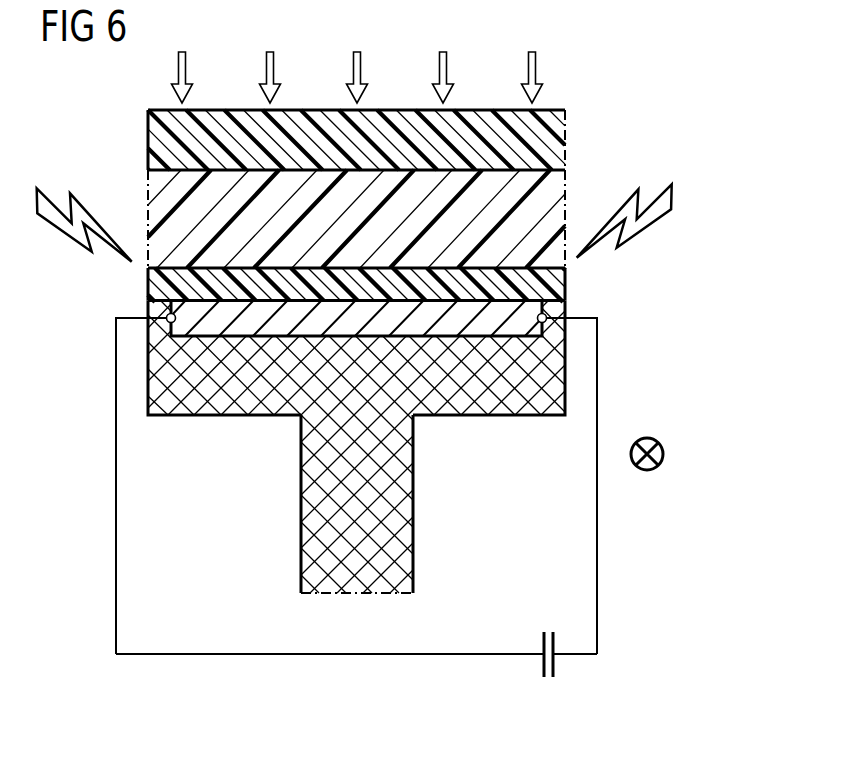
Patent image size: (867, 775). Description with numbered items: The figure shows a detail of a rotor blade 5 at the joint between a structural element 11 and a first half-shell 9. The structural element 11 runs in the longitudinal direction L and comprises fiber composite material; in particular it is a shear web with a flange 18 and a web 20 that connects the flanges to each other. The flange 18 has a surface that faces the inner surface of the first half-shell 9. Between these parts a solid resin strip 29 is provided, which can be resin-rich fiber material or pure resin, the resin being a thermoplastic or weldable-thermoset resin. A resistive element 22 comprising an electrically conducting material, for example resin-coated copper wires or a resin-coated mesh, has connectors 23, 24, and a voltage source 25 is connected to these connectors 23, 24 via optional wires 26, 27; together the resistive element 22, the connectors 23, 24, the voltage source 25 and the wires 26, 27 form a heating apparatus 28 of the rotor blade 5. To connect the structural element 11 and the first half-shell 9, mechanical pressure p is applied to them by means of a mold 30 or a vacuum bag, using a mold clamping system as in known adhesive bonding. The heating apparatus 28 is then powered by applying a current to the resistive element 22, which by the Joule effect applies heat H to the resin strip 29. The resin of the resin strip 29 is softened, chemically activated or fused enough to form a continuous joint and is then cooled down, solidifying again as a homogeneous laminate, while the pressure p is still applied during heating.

The rotor blade 5 is at (760, 102).
The first half-shell 9 is at (540, 169).
The structural element 11 is at (290, 546).
The flange 18 is at (215, 418).
The web 20 is at (413, 508).
The resistive element 22 is at (367, 325).
The connector 23 is at (166, 317).
The connector 24 is at (547, 316).
The voltage source 25 is at (544, 663).
The wire 26 is at (116, 520).
The wire 27 is at (597, 518).
The heating apparatus 28 is at (203, 660).
The resin strip 29 is at (552, 287).
The mold 30 is at (157, 141).
The mechanical pressure p is at (535, 72).
The heat H is at (658, 202).
The longitudinal direction L is at (664, 453).